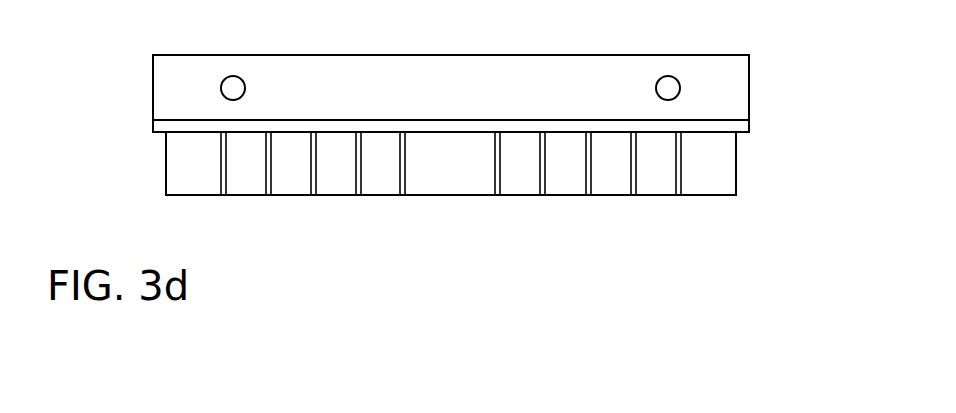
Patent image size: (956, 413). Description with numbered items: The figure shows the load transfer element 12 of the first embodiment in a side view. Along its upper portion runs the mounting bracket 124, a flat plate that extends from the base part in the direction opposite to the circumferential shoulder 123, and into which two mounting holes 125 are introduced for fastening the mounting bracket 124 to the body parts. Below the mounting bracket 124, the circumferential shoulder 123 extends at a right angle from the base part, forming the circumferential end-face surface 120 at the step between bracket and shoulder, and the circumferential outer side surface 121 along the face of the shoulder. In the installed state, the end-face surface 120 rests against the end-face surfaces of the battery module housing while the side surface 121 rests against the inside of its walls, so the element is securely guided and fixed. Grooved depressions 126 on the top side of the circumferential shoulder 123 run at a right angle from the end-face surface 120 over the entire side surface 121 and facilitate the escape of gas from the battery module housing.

The load transfer element 12 is at (760, 65).
The circumferential end-face surface 120 is at (448, 160).
The circumferential outer side surface 121 is at (563, 163).
The circumferential shoulder 123 is at (707, 175).
The mounting bracket 124 is at (455, 77).
The mounting holes 125 is at (233, 76).
The grooved depressions 126 is at (496, 164).